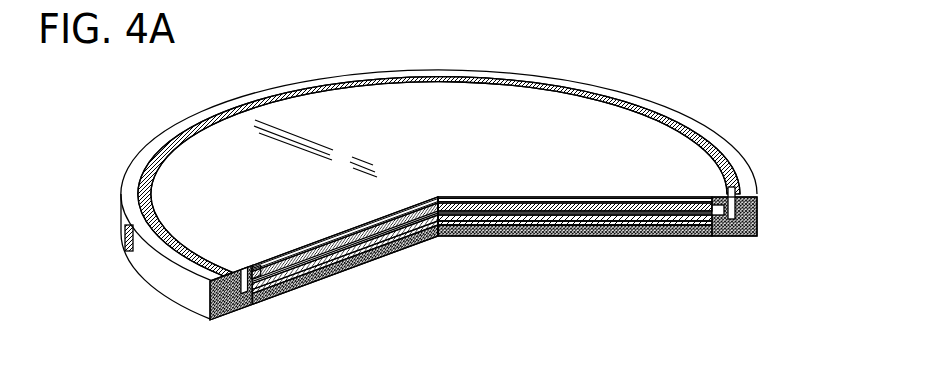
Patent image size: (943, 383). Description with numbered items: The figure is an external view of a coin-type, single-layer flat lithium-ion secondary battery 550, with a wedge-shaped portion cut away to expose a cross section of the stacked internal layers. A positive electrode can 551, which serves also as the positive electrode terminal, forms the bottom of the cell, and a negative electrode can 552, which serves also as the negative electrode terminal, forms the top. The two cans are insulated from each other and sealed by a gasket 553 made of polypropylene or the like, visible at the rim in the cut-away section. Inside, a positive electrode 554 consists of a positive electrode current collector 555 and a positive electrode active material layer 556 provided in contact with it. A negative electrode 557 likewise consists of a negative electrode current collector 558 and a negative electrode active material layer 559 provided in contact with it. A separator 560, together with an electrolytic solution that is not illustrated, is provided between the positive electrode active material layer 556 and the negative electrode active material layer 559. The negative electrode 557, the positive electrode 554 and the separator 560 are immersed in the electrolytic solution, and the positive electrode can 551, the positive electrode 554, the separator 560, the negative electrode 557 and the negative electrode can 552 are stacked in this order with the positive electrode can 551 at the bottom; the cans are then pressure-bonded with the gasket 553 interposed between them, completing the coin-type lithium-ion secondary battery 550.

The coin-type lithium-ion secondary battery 550 is at (176, 71).
The positive electrode can 551 is at (758, 231).
The negative electrode can 552 is at (613, 115).
The gasket 553 is at (758, 220).
The positive electrode 554 is at (753, 336).
The positive electrode current collector 555 is at (687, 238).
The positive electrode active material layer 556 is at (640, 238).
The negative electrode 557 is at (552, 319).
The negative electrode current collector 558 is at (457, 238).
The negative electrode active material layer 559 is at (492, 237).
The separator 560 is at (565, 237).